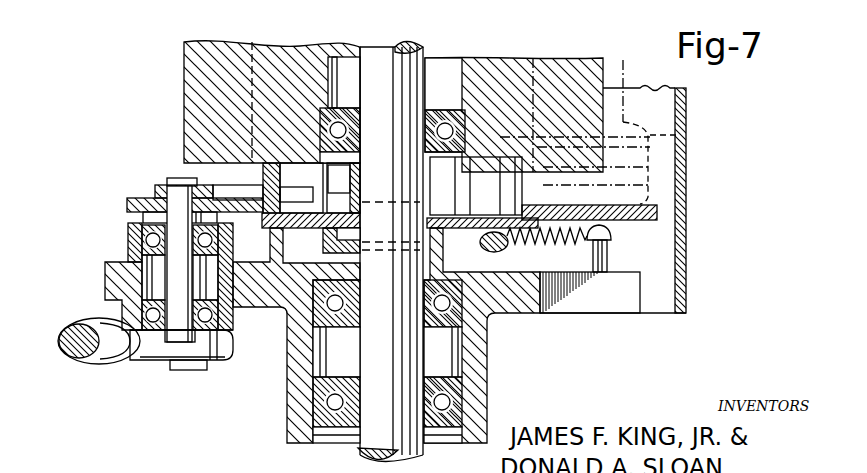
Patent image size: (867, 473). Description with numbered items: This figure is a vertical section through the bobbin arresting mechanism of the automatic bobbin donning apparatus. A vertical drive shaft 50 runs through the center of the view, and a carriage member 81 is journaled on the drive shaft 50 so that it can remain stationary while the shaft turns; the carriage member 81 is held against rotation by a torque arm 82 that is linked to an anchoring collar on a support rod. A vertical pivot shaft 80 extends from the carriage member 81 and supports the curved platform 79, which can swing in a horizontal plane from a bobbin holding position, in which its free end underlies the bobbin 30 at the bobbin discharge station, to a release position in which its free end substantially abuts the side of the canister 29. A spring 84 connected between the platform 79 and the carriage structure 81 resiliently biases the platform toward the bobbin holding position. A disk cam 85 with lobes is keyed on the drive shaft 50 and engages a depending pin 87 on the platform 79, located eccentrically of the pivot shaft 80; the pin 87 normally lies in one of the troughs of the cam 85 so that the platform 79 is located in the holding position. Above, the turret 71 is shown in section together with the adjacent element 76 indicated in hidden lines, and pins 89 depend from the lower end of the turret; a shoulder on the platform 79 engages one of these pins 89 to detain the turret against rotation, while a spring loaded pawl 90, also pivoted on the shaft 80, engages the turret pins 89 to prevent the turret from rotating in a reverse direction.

The canister 29 is at (684, 190).
The bobbin 30 is at (680, 135).
The drive shaft 50 is at (385, 58).
The turret 71 is at (487, 52).
The bore 76 is at (548, 60).
The curved platform 79 is at (652, 222).
The vertical pivot shaft 80 is at (195, 277).
The carriage member 81 is at (512, 313).
The torque arm 82 is at (73, 330).
The spring 84 is at (556, 245).
The disk cam 85 is at (290, 230).
The depending pin 87 is at (325, 243).
The turret pins 89 is at (265, 171).
The spring loaded pawl 90 is at (225, 187).